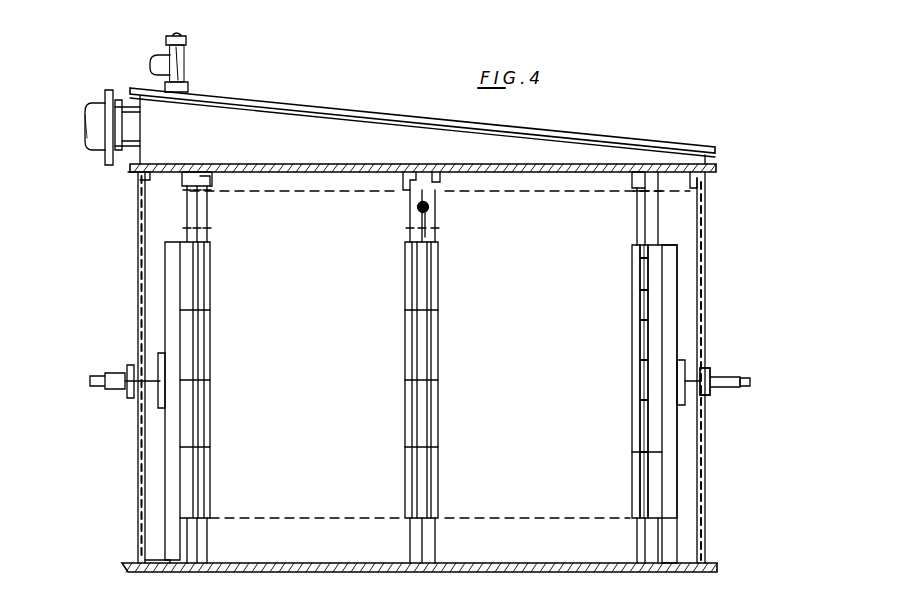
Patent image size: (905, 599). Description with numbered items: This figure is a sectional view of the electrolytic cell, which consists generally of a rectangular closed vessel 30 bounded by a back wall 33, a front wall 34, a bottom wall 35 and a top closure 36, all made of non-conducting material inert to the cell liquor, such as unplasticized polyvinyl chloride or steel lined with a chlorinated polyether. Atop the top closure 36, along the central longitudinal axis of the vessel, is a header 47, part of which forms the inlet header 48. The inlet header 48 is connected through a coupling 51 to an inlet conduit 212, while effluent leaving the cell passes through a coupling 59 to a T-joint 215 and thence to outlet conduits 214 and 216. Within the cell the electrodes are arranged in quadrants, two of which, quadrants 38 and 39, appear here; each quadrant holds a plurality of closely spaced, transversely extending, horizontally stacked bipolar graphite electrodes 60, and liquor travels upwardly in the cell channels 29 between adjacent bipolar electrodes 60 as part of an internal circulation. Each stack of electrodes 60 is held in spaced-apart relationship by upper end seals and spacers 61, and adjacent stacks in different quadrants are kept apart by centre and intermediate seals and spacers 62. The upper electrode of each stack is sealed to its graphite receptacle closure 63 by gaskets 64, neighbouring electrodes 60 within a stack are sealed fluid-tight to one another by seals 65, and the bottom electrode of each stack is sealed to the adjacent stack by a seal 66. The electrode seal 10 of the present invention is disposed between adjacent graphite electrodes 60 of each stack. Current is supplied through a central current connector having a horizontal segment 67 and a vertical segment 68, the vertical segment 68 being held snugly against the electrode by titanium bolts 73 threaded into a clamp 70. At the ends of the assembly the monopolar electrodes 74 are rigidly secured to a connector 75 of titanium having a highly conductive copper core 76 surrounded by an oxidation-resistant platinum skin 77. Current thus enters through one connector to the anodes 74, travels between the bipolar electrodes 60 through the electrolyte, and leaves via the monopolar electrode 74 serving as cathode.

The electrode seal 10 is at (430, 450).
The cell channel 29 is at (637, 488).
The rectangular closed vessel 30 is at (705, 323).
The back wall 33 is at (705, 296).
The front wall 34 is at (138, 302).
The bottom wall 35 is at (349, 573).
The top closure 36 is at (553, 165).
The quadrant 38 is at (312, 356).
The quadrant 39 is at (542, 361).
The header 47 is at (307, 579).
The inlet header 48 is at (388, 125).
The coupling 51 is at (117, 166).
The coupling 59 is at (190, 85).
The bipolar graphite electrode 60 is at (638, 276).
The upper end seals and spacers 61 is at (205, 190).
The centre and intermediate seals and spacers 62 is at (410, 184).
The graphite receptacle closure 63 is at (637, 206).
The gasket 64 is at (634, 245).
The seal 65 is at (641, 312).
The seal 66 is at (635, 548).
The horizontal segment 67 is at (430, 207).
The vertical segment 68 is at (428, 225).
The clamp 70 is at (425, 280).
The bolt 73 is at (425, 308).
The monopolar electrode 74 is at (170, 340).
The connector 75 is at (119, 389).
The conductive core 76 is at (745, 389).
The platinum skin 77 is at (722, 377).
The inlet conduit 212 is at (95, 152).
The outlet conduit 214 is at (150, 62).
The T-joint 215 is at (185, 53).
The outlet conduit 216 is at (184, 44).